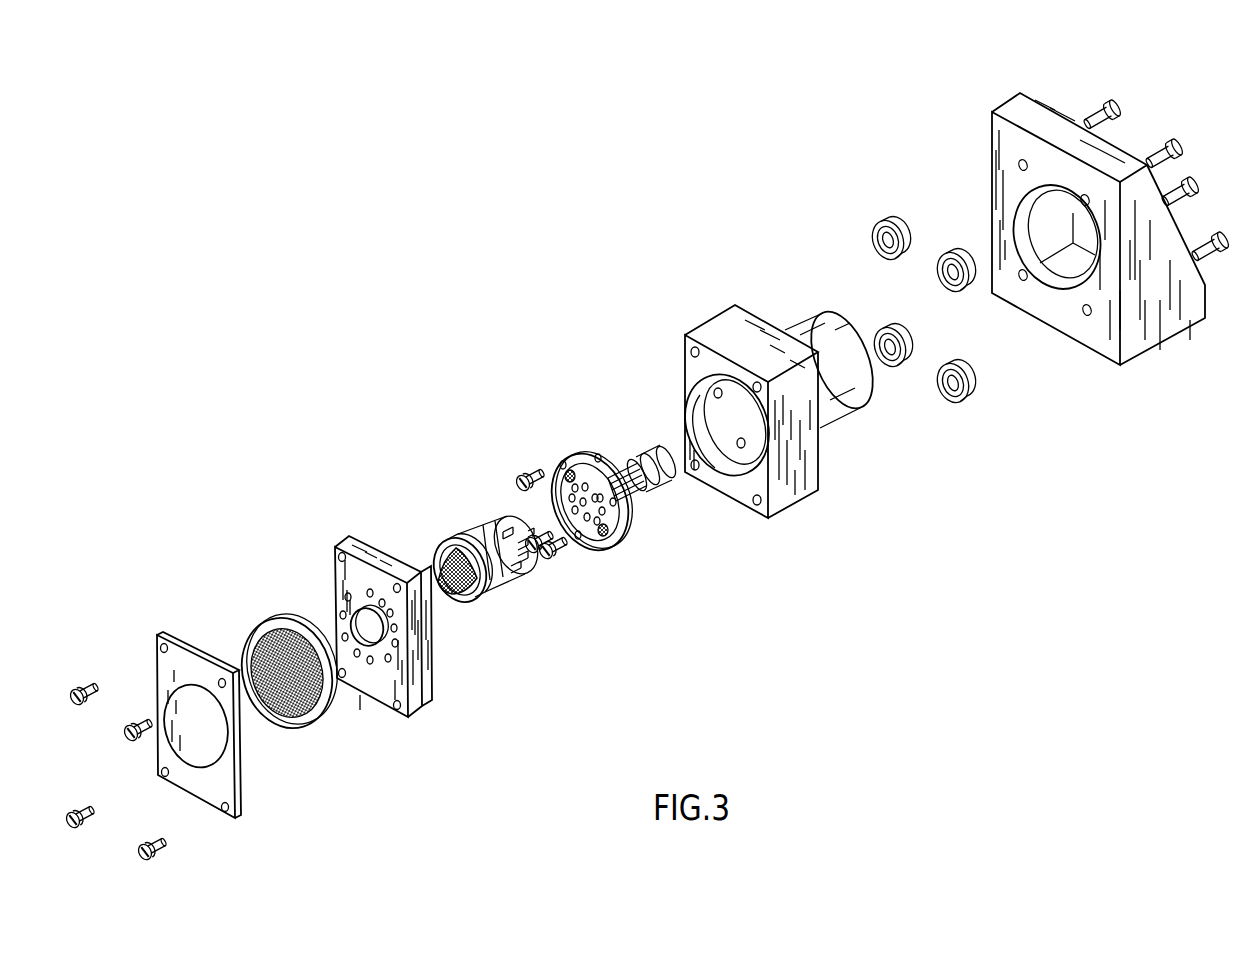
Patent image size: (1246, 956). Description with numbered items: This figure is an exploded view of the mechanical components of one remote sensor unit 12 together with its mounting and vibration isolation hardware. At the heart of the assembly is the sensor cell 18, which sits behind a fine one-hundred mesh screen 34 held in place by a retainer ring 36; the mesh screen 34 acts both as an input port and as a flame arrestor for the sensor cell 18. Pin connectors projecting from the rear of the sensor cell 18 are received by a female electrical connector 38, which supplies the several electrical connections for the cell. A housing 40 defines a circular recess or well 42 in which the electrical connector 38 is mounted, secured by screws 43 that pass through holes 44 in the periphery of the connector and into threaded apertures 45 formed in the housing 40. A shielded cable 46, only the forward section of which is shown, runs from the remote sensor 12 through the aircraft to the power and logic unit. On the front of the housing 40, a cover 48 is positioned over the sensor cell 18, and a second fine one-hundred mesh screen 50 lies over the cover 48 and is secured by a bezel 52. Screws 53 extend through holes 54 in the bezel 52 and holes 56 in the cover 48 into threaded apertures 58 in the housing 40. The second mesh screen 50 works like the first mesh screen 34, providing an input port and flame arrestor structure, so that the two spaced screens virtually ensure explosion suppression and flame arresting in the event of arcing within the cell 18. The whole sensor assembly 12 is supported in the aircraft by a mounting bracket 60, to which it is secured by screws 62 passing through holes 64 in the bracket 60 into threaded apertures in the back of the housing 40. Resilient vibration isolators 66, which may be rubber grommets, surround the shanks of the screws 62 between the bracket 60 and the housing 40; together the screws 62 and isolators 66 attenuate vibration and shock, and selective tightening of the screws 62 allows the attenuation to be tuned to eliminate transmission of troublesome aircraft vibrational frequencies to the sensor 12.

The remote sensor unit 12 is at (421, 422).
The sensor cell 18 is at (508, 576).
The fine mesh screen 34 is at (441, 588).
The retainer ring 36 is at (457, 534).
The female electrical connector 38 is at (590, 473).
The housing 40 is at (745, 312).
The circular recess 42 is at (698, 418).
The screws 43 is at (527, 475).
The holes 44 is at (563, 462).
The threaded apertures 45 is at (690, 388).
The shielded cable 46 is at (662, 480).
The cover 48 is at (366, 537).
The second fine mesh screen 50 is at (312, 728).
The bezel 52 is at (186, 650).
The screws 53 is at (134, 727).
The holes 54 is at (165, 644).
The holes 56 is at (395, 590).
The threaded apertures 58 is at (757, 383).
The mounting bracket 60 is at (990, 124).
The screws 62 is at (1179, 140).
The holes 64 is at (1084, 196).
The resilient vibration isolators 66 is at (953, 252).